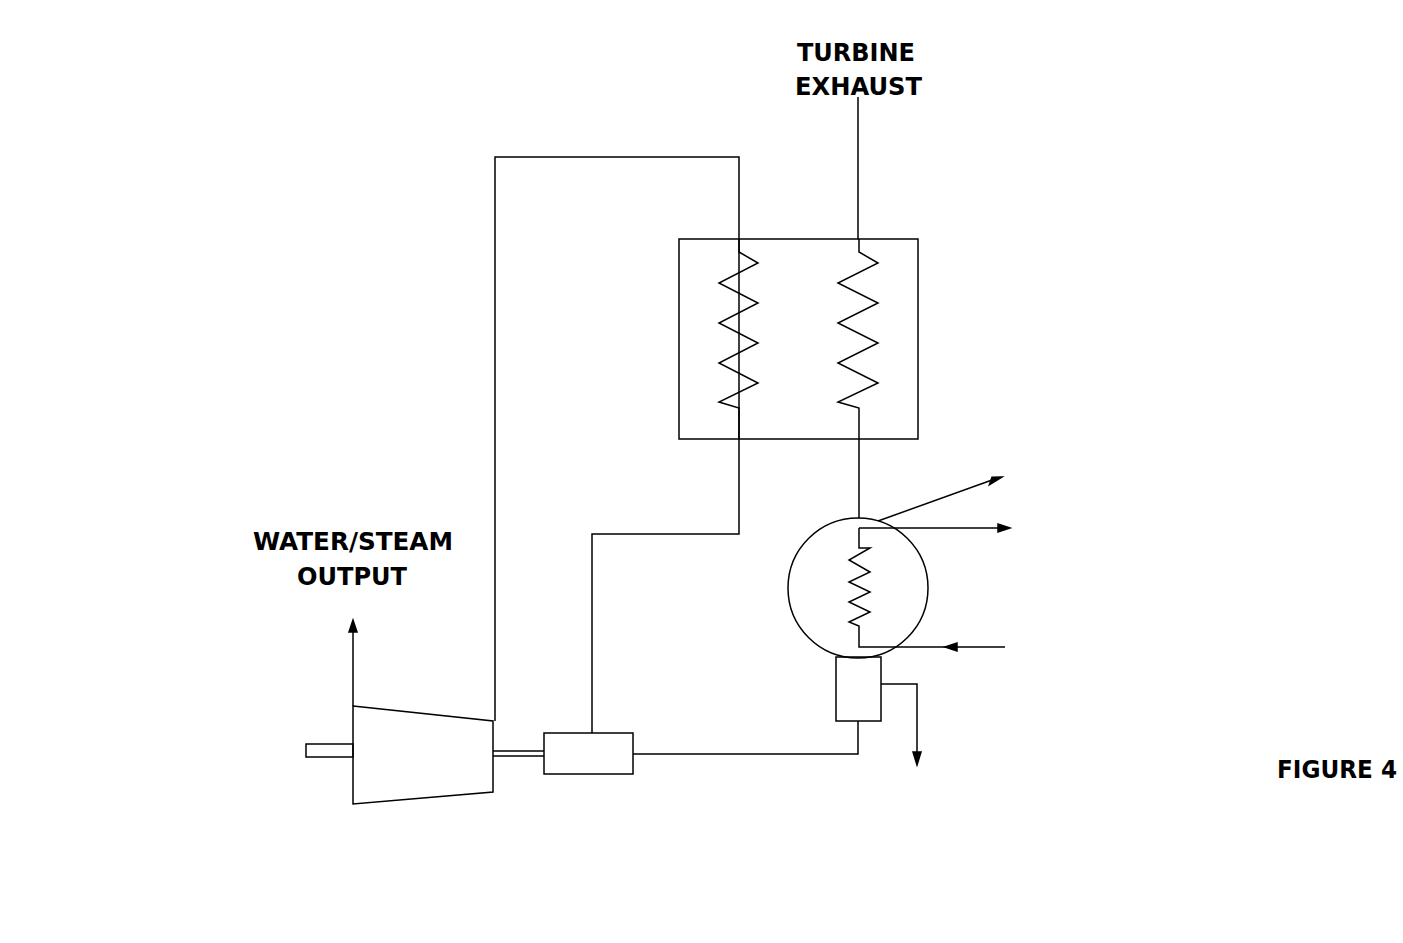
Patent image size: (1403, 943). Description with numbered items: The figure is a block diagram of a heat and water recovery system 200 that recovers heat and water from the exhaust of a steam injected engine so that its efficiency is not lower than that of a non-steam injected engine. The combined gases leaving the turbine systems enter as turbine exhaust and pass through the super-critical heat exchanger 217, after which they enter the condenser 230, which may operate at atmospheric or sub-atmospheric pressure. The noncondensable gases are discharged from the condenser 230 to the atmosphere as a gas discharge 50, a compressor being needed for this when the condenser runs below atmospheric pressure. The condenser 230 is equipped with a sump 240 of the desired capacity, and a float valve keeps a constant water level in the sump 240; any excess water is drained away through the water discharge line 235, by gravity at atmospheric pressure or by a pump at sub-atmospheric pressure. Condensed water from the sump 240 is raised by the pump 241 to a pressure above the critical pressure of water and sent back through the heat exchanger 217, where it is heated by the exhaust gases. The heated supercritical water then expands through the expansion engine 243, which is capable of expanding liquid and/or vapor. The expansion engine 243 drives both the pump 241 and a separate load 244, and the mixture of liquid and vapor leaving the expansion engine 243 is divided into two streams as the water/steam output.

The heat and water recovery system 200 is at (218, 219).
The super-critical heat exchanger 217 is at (918, 267).
The gas discharge 50 is at (962, 488).
The condenser 230 is at (927, 607).
The sump 240 is at (845, 699).
The line 235 is at (921, 713).
The pump 241 is at (613, 733).
The expansion engine 243 is at (399, 793).
The load 244 is at (276, 749).